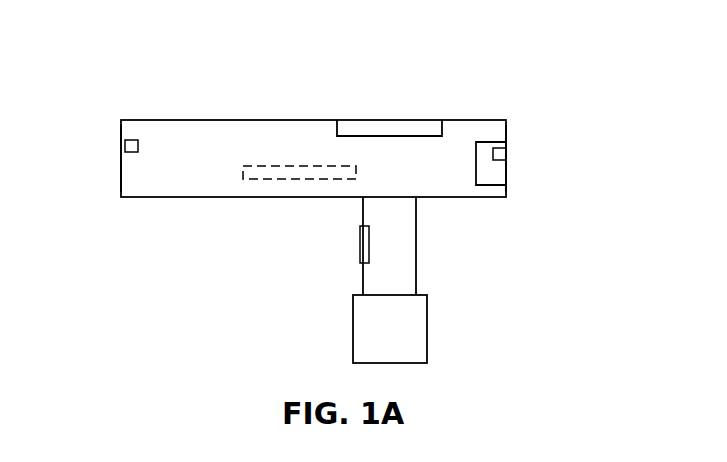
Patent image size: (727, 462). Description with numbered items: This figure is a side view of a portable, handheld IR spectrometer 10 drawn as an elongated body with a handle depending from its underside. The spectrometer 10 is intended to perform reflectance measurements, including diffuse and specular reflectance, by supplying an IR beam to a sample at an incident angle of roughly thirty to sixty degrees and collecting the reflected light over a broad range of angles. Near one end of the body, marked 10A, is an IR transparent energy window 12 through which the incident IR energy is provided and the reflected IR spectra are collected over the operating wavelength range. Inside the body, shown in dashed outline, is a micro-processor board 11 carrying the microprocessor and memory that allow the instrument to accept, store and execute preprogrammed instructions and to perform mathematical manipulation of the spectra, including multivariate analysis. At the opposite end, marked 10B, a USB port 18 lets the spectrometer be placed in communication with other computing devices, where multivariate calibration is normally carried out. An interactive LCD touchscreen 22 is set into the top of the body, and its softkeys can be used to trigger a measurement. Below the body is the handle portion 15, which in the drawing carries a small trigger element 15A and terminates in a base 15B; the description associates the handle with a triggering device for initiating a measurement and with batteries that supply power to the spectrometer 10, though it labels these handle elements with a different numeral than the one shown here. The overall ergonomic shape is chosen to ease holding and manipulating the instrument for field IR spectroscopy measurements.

The portable IR spectrometer 10 is at (264, 88).
The first end of housing 10A is at (105, 178).
The second end of housing 10B is at (522, 169).
The micro-processor board 11 is at (260, 181).
The IR transparent energy window 12 is at (125, 145).
The stem / neck portion 15 is at (400, 247).
The button on stem 15A is at (360, 245).
The base of stem 15B is at (400, 330).
The USB port 18 is at (506, 150).
The interactive LCD touchscreen 22 is at (397, 130).